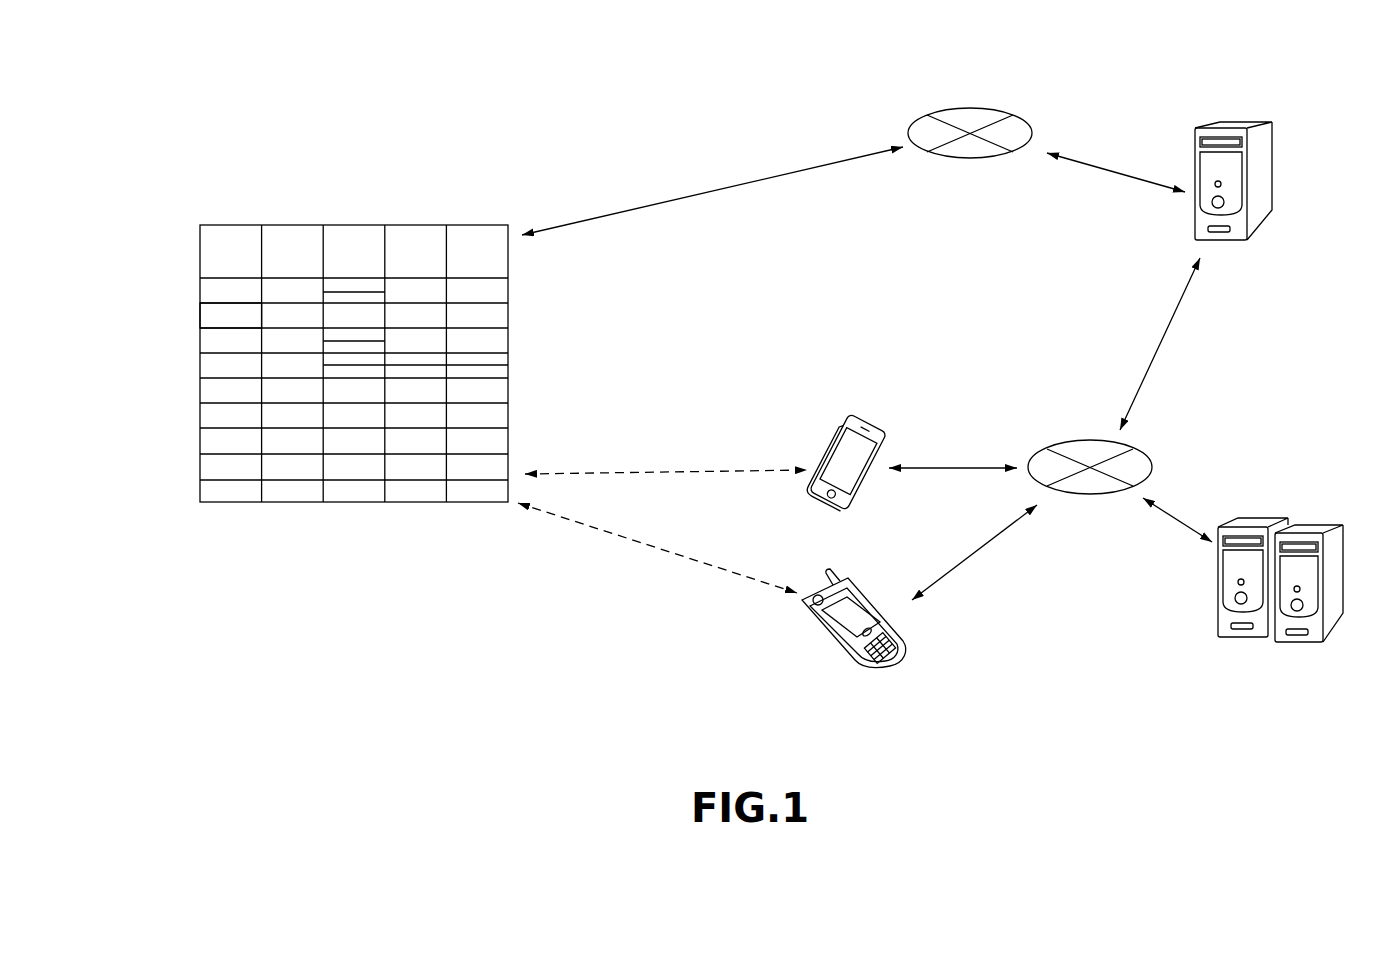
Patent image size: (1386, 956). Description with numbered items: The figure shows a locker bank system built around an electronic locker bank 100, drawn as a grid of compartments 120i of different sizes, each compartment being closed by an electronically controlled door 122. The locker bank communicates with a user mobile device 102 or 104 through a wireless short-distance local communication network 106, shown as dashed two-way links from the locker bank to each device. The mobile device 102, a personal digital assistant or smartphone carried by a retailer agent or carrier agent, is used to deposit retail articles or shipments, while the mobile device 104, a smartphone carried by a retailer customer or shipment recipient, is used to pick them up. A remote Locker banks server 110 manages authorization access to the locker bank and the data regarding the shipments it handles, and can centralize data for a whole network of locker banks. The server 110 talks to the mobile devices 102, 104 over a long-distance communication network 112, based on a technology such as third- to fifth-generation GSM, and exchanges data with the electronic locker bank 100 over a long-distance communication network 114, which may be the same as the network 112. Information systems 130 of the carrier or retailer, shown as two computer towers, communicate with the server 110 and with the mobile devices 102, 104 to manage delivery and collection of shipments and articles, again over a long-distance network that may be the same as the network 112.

The electronic locker bank 100 is at (170, 212).
The compartments 120i is at (200, 312).
The electronically controlled door 122 is at (208, 320).
The mobile device 102 is at (905, 630).
The mobile device 104 is at (866, 428).
The wireless short-distance local communication network 106 is at (595, 475).
The Locker banks server 110 is at (1195, 165).
The long-distance communication network 112 is at (1070, 441).
The long-distance communication network 114 is at (970, 108).
The information systems 130 is at (1268, 522).